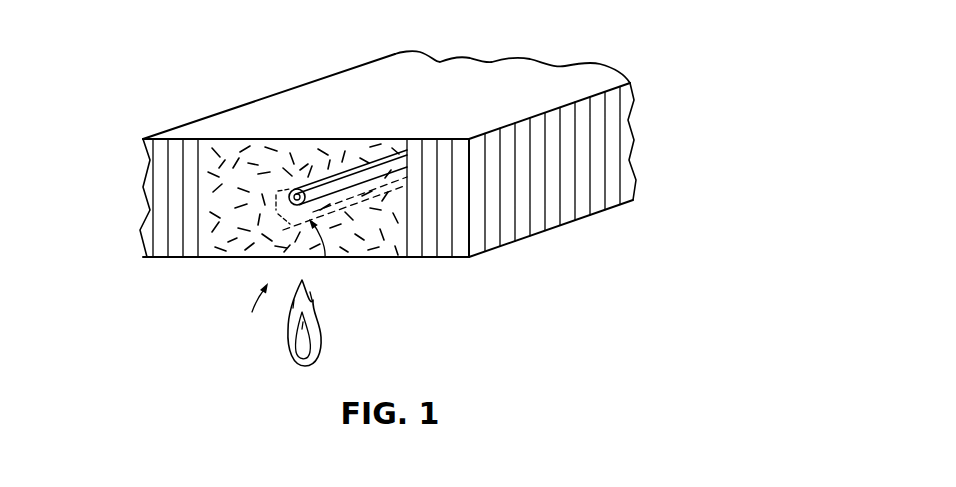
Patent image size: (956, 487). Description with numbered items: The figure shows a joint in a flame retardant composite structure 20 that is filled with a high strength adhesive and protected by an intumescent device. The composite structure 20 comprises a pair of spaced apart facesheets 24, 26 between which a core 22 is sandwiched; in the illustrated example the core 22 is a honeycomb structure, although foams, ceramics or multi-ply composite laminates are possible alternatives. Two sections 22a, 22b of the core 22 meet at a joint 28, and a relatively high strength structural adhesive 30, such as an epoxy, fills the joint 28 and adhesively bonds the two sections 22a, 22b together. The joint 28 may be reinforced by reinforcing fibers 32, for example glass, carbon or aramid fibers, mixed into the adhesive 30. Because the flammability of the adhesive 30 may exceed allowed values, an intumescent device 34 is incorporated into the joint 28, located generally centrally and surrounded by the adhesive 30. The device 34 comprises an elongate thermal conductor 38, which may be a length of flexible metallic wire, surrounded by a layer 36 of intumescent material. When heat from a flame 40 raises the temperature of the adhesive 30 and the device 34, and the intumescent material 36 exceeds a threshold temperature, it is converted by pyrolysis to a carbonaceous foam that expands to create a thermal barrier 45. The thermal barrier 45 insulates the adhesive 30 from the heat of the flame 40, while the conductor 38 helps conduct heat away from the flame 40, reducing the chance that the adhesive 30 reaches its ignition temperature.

The flame retardant composite structure 20 is at (183, 88).
The core 22 is at (152, 160).
The first section of the core 22a is at (152, 218).
The second section of the core 22b is at (440, 167).
The facesheet 24 is at (399, 138).
The facesheet 26 is at (357, 257).
The joint 28 is at (252, 312).
The structural adhesive 30 is at (225, 242).
The reinforcing fibers 32 is at (352, 150).
The intumescent device 34 is at (325, 257).
The layer of intumescent material 36 is at (294, 188).
The elongate thermal conductor 38 is at (311, 162).
The flame 40 is at (300, 353).
The thermal barrier 45 is at (283, 224).